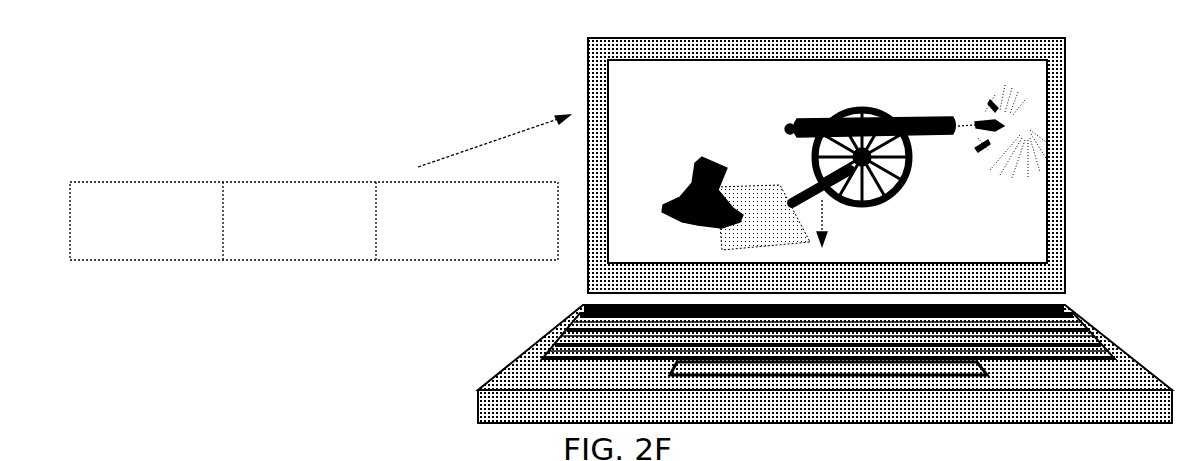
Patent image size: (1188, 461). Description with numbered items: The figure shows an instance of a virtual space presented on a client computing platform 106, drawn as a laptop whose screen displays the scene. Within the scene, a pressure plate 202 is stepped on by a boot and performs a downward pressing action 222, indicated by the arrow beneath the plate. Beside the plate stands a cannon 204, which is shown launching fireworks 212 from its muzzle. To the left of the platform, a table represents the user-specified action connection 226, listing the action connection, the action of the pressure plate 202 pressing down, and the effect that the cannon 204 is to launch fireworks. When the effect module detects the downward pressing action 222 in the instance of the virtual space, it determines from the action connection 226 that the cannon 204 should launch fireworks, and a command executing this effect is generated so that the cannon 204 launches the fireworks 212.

The client computing platform 106 is at (825, 230).
The pressure plate 202 is at (752, 186).
The cannon 204 is at (870, 161).
The fireworks 212 is at (960, 108).
The downward pressing action 222 is at (825, 225).
The action connection 226 is at (242, 270).